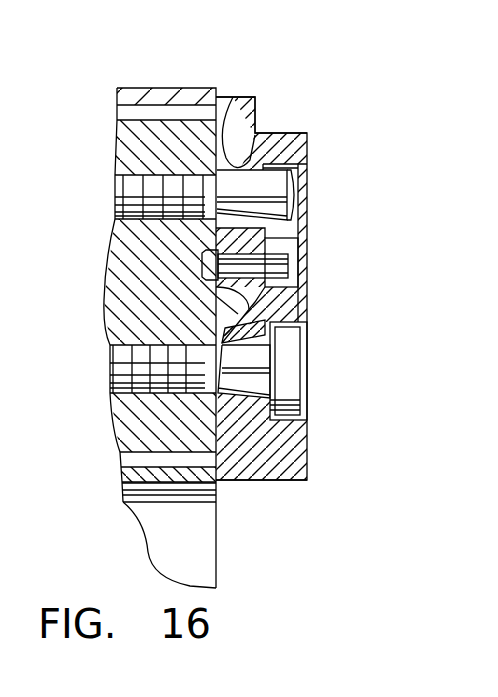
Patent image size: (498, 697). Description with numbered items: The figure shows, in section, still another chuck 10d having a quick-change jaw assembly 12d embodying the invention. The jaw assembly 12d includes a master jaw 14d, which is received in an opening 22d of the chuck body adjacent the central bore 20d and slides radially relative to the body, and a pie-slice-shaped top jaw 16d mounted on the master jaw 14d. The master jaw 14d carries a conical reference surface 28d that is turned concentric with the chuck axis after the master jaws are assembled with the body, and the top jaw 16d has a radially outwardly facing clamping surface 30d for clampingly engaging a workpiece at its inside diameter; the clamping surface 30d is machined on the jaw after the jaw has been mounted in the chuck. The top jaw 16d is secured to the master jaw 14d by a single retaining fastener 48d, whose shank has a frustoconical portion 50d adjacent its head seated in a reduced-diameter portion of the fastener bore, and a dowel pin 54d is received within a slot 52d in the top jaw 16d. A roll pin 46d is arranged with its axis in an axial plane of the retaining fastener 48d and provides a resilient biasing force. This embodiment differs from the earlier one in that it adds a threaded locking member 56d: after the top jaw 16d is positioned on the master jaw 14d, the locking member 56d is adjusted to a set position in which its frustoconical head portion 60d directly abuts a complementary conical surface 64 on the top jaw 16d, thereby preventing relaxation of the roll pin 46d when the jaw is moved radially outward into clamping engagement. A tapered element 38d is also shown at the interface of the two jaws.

The chuck 10d is at (182, 58).
The jaw assembly 12d is at (322, 121).
The master jaw 14d is at (101, 143).
The top jaw 16d is at (293, 502).
The central bore 20d is at (195, 478).
The opening 22d is at (130, 462).
The reference surface 28d is at (240, 323).
The clamping surface 30d is at (258, 142).
The dome projection 38d is at (217, 283).
The roll pin 46d is at (292, 318).
The retaining fastener 48d is at (288, 385).
The frustoconical portion 50d is at (240, 382).
The slot 52d is at (288, 246).
The dowel pin 54d is at (278, 261).
The locking member 56d is at (288, 200).
The head portion 60d is at (278, 178).
The conical surface 64 is at (230, 110).